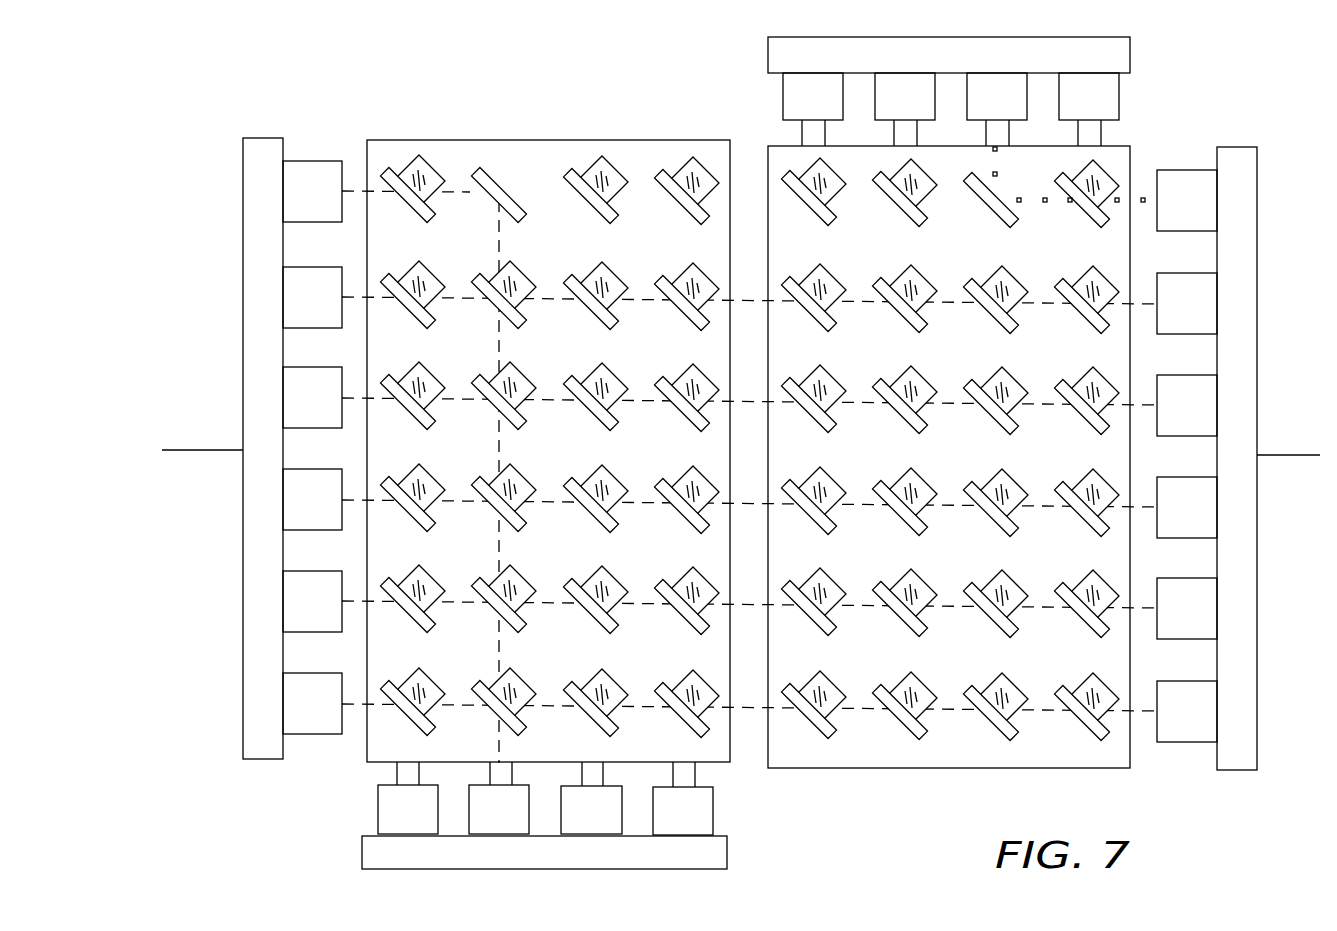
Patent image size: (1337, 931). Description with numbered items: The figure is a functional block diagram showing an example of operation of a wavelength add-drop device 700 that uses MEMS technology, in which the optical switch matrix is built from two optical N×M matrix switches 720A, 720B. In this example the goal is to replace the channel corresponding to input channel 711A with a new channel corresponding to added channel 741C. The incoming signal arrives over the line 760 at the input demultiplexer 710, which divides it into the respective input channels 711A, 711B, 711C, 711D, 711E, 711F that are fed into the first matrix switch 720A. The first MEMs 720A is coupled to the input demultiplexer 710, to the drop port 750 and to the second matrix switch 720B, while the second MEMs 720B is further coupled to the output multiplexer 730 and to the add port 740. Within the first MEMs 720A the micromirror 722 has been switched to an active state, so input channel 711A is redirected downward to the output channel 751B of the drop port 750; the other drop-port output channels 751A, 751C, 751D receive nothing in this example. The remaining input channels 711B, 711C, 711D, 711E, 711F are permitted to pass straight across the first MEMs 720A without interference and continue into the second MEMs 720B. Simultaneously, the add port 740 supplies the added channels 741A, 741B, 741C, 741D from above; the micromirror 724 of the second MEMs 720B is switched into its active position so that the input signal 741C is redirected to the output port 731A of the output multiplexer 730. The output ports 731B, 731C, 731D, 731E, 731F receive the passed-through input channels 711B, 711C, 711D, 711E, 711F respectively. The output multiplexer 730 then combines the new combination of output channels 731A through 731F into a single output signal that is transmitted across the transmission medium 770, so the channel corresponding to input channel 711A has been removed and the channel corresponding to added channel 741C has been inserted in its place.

The wavelength add-drop device 700 is at (266, 107).
The input demultiplexer 710 is at (253, 760).
The input channel 711A is at (337, 207).
The input channel 711B is at (337, 313).
The input channel 711C is at (337, 413).
The input channel 711D is at (337, 515).
The input channel 711E is at (337, 617).
The input channel 711F is at (337, 719).
The optical N×M matrix switch 720A is at (364, 745).
The optical N×M matrix switch 720B is at (880, 768).
The micromirror 722 is at (500, 172).
The micromirror 724 is at (1013, 222).
The output multiplexer 730 is at (1225, 770).
The output channel 731A is at (1211, 216).
The output port 731B is at (1211, 319).
The output port 731C is at (1211, 421).
The output port 731D is at (1211, 523).
The output port 731E is at (1211, 624).
The output port 731F is at (1211, 727).
The add port 740 is at (1130, 48).
The added channel 741A is at (837, 113).
The added channel 741B is at (929, 113).
The added channel 741C is at (1021, 113).
The added channel 741D is at (1113, 113).
The drop port 750 is at (727, 845).
The output channel 751A is at (432, 827).
The output channel 751B is at (523, 827).
The output channel 751C is at (615, 827).
The output channel 751D is at (707, 827).
The input fiber 760 is at (192, 452).
The transmission medium 770 is at (1285, 457).